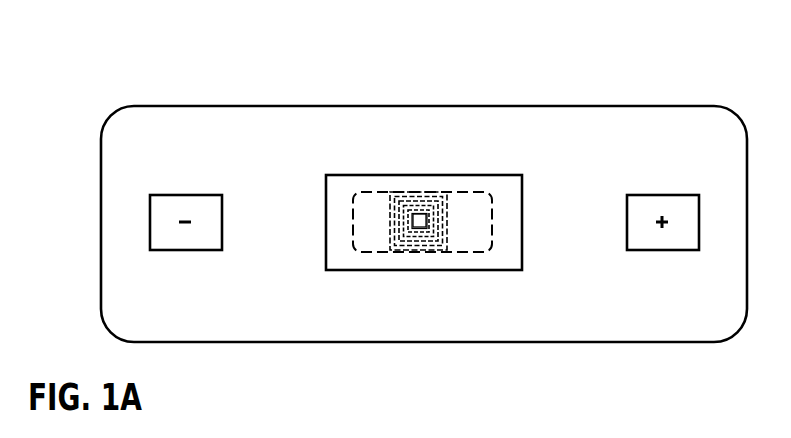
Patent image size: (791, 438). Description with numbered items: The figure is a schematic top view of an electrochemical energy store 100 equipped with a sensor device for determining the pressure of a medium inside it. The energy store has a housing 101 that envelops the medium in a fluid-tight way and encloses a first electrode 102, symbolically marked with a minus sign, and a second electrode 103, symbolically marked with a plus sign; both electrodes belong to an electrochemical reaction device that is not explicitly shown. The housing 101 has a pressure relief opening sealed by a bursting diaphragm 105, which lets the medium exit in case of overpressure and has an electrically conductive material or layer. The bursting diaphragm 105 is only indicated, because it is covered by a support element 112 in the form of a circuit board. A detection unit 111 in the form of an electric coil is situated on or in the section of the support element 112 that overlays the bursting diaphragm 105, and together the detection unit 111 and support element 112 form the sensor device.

The electrochemical energy store 100 is at (228, 72).
The housing 101 is at (601, 105).
The first electrode 102 is at (187, 237).
The second electrode 103 is at (659, 240).
The bursting diaphragm 105 is at (378, 192).
The detection unit 111 is at (432, 222).
The support element 112 is at (428, 175).